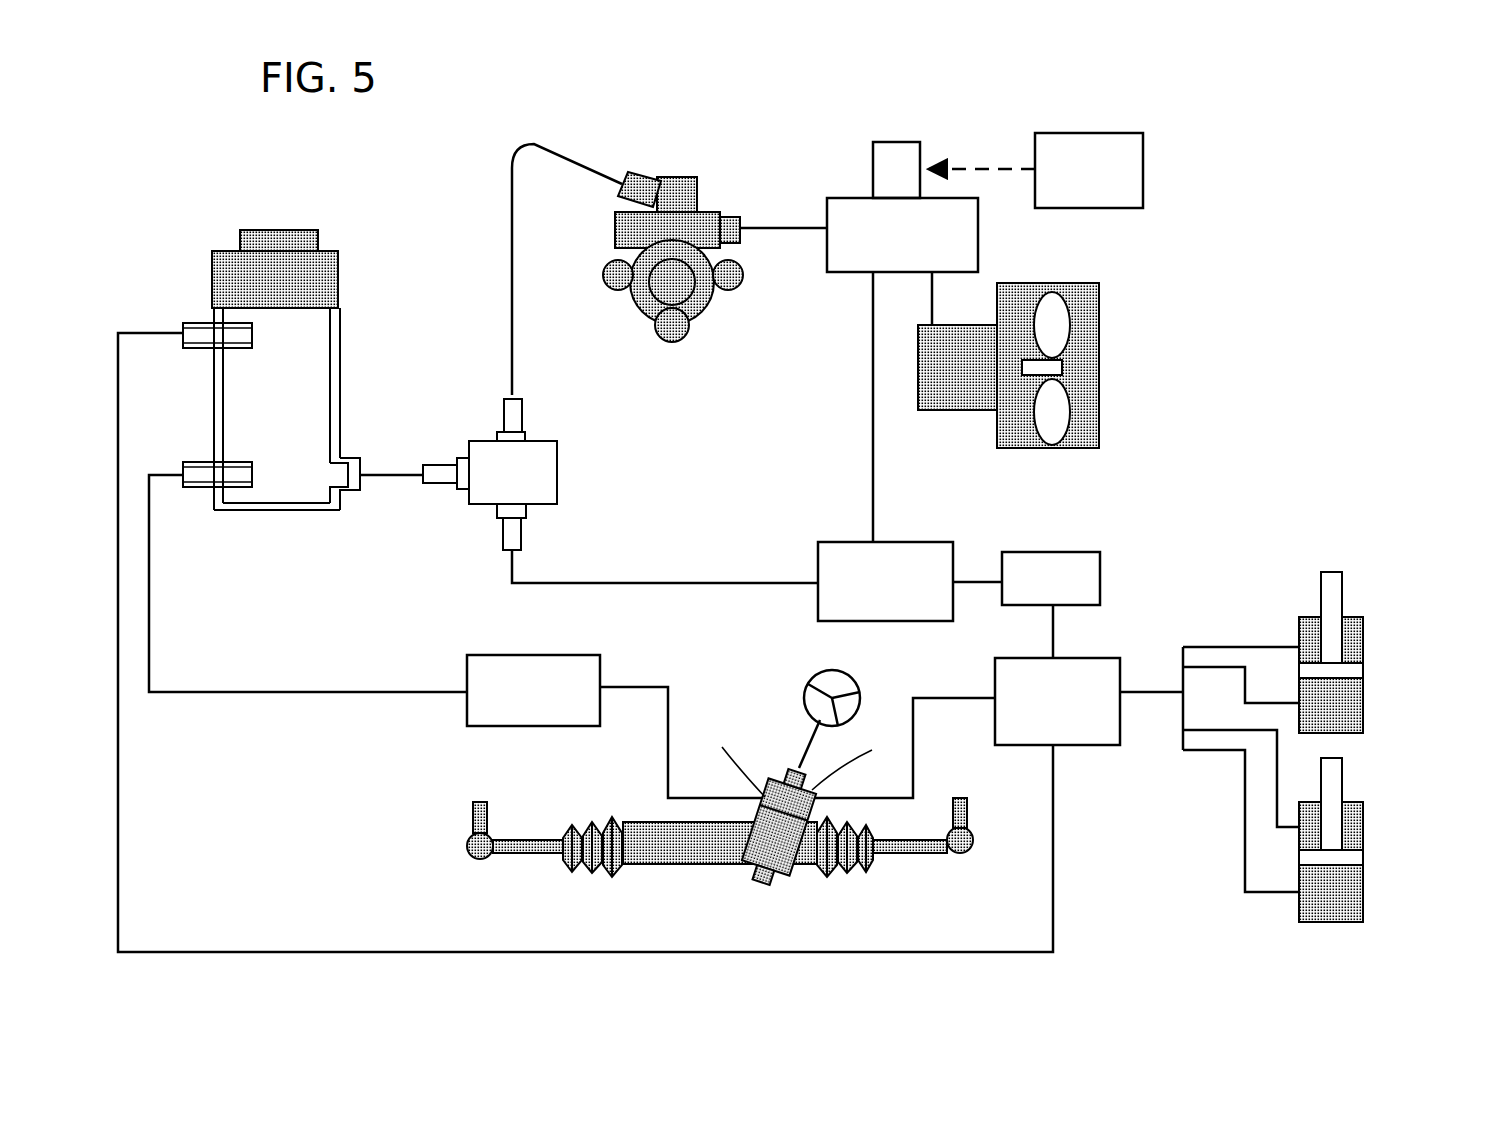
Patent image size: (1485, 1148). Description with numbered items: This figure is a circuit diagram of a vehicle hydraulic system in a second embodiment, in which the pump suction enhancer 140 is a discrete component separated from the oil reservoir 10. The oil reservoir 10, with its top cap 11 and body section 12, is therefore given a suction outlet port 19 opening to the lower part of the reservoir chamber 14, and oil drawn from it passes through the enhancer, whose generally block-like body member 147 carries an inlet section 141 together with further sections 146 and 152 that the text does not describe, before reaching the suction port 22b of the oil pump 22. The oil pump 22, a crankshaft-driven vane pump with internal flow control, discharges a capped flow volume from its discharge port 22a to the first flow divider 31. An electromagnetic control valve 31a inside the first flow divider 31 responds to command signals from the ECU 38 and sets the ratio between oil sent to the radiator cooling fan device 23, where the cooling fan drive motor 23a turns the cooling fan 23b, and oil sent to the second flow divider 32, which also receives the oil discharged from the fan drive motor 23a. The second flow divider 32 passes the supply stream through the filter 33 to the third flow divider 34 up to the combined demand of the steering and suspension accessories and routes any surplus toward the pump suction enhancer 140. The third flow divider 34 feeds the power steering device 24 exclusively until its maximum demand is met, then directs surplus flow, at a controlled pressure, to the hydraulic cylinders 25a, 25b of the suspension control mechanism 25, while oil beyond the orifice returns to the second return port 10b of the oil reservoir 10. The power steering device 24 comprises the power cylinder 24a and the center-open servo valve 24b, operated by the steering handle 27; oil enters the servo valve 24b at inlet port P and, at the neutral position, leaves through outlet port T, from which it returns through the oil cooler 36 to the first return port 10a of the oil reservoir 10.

The oil reservoir 10 is at (203, 245).
The first return port 10a is at (201, 471).
The second return port 10b is at (196, 321).
The top cap 11 is at (273, 229).
The body section 12 is at (213, 428).
The reservoir chamber 14 is at (278, 492).
The suction outlet port 19 is at (347, 495).
The oil pump 22 is at (708, 318).
The discharge port 22a is at (733, 216).
The suction port 22b is at (630, 175).
The radiator cooling fan device 23 is at (1103, 330).
The cooling fan drive motor 23a is at (942, 402).
The cooling fan 23b is at (1062, 415).
The power steering device 24 is at (634, 805).
The power cylinder 24a is at (674, 850).
The center-open servo valve 24b is at (775, 793).
The suspension control mechanism 25 is at (1378, 706).
The hydraulic cylinder 25a is at (1350, 640).
The hydraulic cylinder 25b is at (1350, 830).
The steering handle 27 is at (855, 685).
The first flow divider 31 is at (842, 216).
The electromagnetic control valve 31a is at (905, 152).
The second flow divider 32 is at (822, 566).
The filter 33 is at (1088, 560).
The third flow divider 34 is at (1088, 660).
The oil cooler 36 is at (470, 666).
The ECU 38 is at (1128, 146).
The pump suction enhancer 140 is at (565, 447).
The inlet section 141 is at (517, 534).
The valve inlet port 146 is at (513, 407).
The body member 147 is at (535, 488).
The valve connector 152 is at (432, 470).